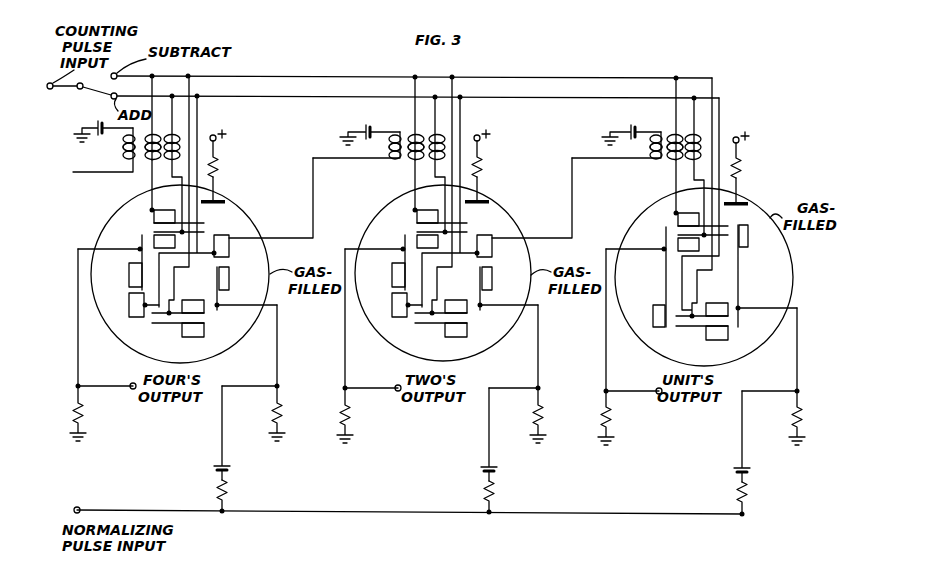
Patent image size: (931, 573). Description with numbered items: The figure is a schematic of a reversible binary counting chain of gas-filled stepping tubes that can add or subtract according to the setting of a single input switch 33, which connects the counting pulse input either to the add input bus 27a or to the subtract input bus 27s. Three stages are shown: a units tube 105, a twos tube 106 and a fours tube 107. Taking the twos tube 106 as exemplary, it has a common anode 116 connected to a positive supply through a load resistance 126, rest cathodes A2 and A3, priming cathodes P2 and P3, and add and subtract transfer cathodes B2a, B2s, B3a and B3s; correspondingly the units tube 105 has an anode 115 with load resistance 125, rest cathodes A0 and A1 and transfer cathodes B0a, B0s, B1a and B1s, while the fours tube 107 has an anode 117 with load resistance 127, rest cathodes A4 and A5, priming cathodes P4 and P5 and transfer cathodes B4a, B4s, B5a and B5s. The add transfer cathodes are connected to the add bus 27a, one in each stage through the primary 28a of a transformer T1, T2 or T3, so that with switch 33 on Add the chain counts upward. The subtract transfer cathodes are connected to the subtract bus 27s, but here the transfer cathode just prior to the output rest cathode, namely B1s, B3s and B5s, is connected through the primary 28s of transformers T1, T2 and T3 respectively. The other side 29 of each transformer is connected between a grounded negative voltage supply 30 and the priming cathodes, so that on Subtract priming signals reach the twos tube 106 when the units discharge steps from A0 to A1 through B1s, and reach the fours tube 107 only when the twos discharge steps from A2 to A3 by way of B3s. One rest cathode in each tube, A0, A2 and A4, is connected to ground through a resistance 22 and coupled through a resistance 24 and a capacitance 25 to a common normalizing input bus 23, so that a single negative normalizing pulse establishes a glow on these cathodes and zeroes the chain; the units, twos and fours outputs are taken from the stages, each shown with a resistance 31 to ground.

The subtract input bus 27s is at (545, 77).
The add input bus 27a is at (548, 98).
The input switch 33 is at (90, 91).
The primary of transformer (subtract side) 28s is at (154, 133).
The primary of transformer (add side) 28a is at (181, 134).
The other side of transformer 29 is at (126, 150).
The grounded negative voltage supply 30 is at (98, 137).
The transformer T3 is at (142, 165).
The transformer T2 is at (405, 165).
The transformer T1 is at (668, 165).
The anode resistor 127 is at (220, 163).
The load resistance 126 is at (484, 165).
The anode resistor 125 is at (744, 165).
The anode 117 is at (220, 201).
The common anode 116 is at (486, 201).
The anode 115 is at (745, 203).
The fours tube 107 is at (247, 220).
The twos tube 106 is at (508, 221).
The units tube 105 is at (793, 280).
The subtract transfer cathode B5s is at (152, 212).
The add transfer cathode B5a is at (154, 240).
The rest cathode A5 is at (129, 270).
The priming cathode P5 is at (230, 246).
The rest cathode A4 is at (229, 279).
The priming cathode P4 is at (130, 312).
The add transfer cathode B4a is at (205, 318).
The subtract transfer cathode B4s is at (190, 338).
The subtract transfer cathode B3s is at (415, 212).
The add transfer cathode B3a is at (417, 240).
The rest cathode A3 is at (392, 278).
The priming cathode P3 is at (492, 250).
The rest cathode A2 is at (492, 283).
The priming cathode P2 is at (394, 313).
The add transfer cathode B2a is at (467, 318).
The subtract transfer cathode B2s is at (456, 338).
The subtract transfer cathode B1s is at (676, 215).
The add transfer cathode B1a is at (688, 250).
The rest cathode A1 is at (659, 327).
The rest cathode A0 is at (749, 240).
The add transfer cathode B0a is at (728, 312).
The subtract transfer cathode B0s is at (717, 340).
The output resistor 31 is at (85, 420).
The resistance 22 is at (270, 422).
The capacitance 25 is at (214, 468).
The resistance 24 is at (230, 492).
The common normalizing input bus 23 is at (340, 511).